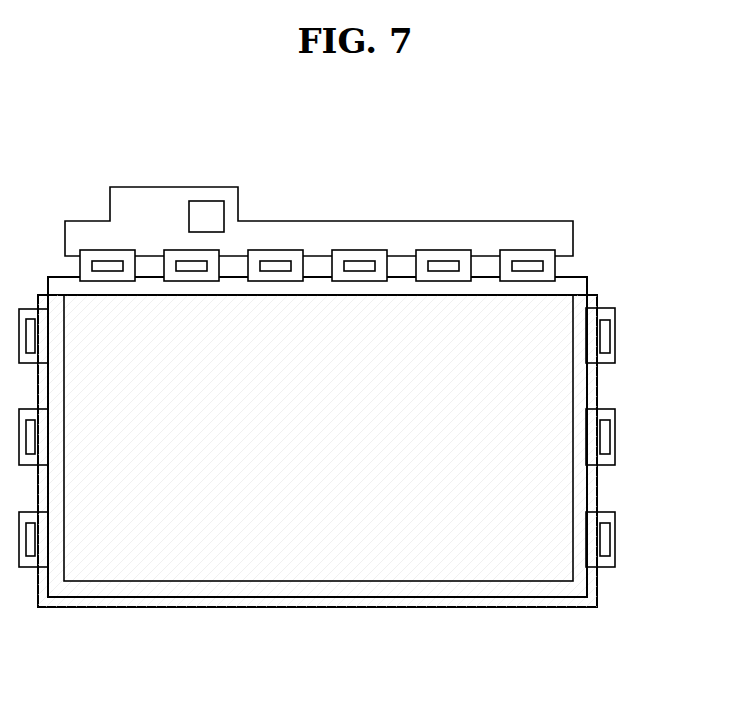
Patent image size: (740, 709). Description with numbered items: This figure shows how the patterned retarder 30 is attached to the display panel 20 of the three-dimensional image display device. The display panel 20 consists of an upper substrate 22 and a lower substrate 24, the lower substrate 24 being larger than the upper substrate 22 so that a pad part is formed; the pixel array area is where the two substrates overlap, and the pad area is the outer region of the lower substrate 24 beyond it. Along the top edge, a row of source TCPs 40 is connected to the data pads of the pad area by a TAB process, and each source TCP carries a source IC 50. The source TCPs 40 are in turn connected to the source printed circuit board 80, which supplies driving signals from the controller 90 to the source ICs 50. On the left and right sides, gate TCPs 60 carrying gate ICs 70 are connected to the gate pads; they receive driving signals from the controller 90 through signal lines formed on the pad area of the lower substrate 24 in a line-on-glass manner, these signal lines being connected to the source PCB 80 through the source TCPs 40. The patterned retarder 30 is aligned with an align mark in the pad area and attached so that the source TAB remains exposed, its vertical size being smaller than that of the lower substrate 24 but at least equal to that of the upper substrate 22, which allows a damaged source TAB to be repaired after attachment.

The display panel 20 is at (343, 665).
The upper substrate 22 is at (357, 582).
The lower substrate 24 is at (432, 598).
The patterned retarder 30 is at (228, 608).
The source TCPs 40 is at (428, 250).
The source ICs 50 is at (448, 265).
The gate TCPs 60 is at (615, 319).
The gate ICs 70 is at (605, 343).
The source printed circuit board 80 is at (311, 234).
The controller 90 is at (206, 210).